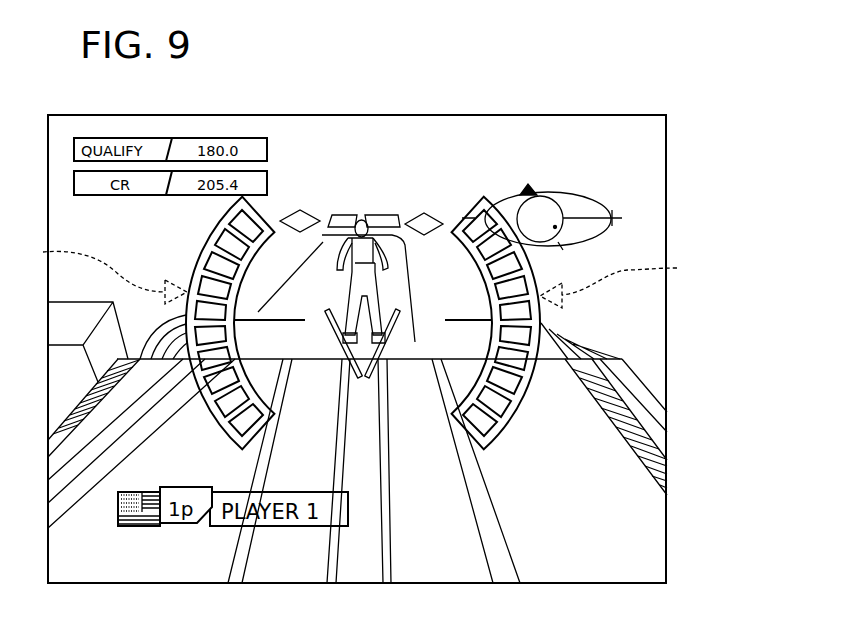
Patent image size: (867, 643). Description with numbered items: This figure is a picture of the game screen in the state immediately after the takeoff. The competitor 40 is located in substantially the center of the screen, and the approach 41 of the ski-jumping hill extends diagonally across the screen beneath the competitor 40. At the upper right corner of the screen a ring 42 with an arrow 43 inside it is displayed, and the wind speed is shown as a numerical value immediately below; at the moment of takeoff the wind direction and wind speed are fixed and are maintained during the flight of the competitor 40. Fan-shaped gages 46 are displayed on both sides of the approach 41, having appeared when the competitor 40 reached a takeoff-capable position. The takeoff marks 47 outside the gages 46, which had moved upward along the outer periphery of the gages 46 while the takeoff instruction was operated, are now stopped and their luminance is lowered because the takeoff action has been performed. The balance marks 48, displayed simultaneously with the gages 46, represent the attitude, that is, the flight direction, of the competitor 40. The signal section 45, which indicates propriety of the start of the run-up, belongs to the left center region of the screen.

The competitor 40 is at (378, 283).
The approach 41 is at (437, 541).
The ring 42 is at (583, 193).
The arrow 43 is at (603, 218).
The signal section 45 is at (519, 402).
The fan-shaped gages 46 is at (231, 444).
The takeoff marks 47 is at (361, 278).
The balance marks 48 is at (312, 340).